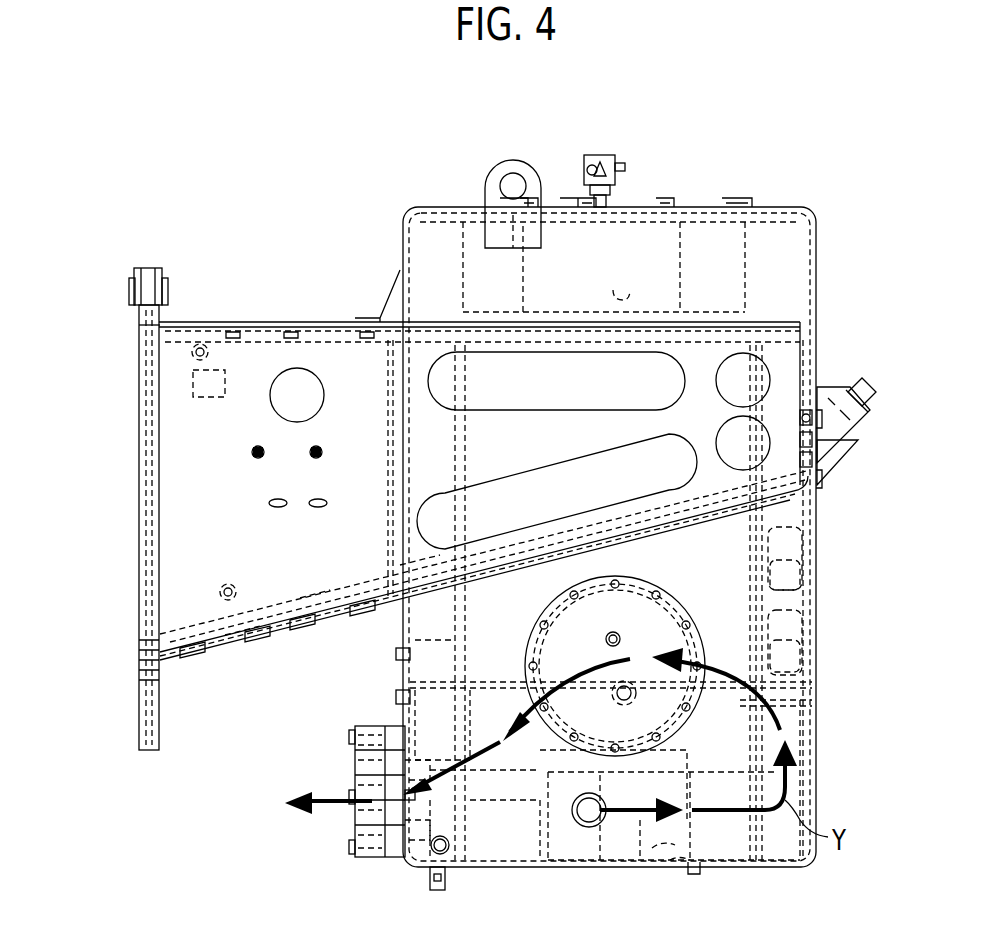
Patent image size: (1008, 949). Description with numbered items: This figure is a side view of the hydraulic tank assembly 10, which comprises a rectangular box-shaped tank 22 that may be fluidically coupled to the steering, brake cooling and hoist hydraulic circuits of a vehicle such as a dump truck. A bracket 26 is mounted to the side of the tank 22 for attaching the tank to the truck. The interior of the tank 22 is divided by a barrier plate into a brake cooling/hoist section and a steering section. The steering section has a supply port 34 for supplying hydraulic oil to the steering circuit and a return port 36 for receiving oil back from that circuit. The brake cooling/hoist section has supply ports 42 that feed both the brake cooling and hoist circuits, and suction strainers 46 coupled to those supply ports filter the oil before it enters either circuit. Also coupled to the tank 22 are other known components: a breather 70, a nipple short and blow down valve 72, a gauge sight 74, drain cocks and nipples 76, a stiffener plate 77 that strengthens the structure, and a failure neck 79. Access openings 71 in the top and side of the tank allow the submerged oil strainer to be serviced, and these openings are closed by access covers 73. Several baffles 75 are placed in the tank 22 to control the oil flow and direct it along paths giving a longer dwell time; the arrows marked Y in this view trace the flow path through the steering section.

The hydraulic tank assembly 10 is at (93, 422).
The tank 22 is at (813, 245).
The bracket 26 is at (360, 367).
The supply port 34 is at (385, 812).
The return port 36 is at (592, 818).
The supply ports 42 is at (345, 806).
The suction strainers 46 is at (665, 830).
The breather 70 is at (508, 160).
The access openings 71 is at (818, 708).
The nipple short and blow down valve 72 is at (608, 157).
The access covers 73 is at (690, 602).
The gauge sight 74 is at (826, 480).
The baffles 75 is at (815, 598).
The drain cocks and nipples 76 is at (447, 875).
The stiffener plate 77 is at (815, 660).
The failure neck 79 is at (862, 402).